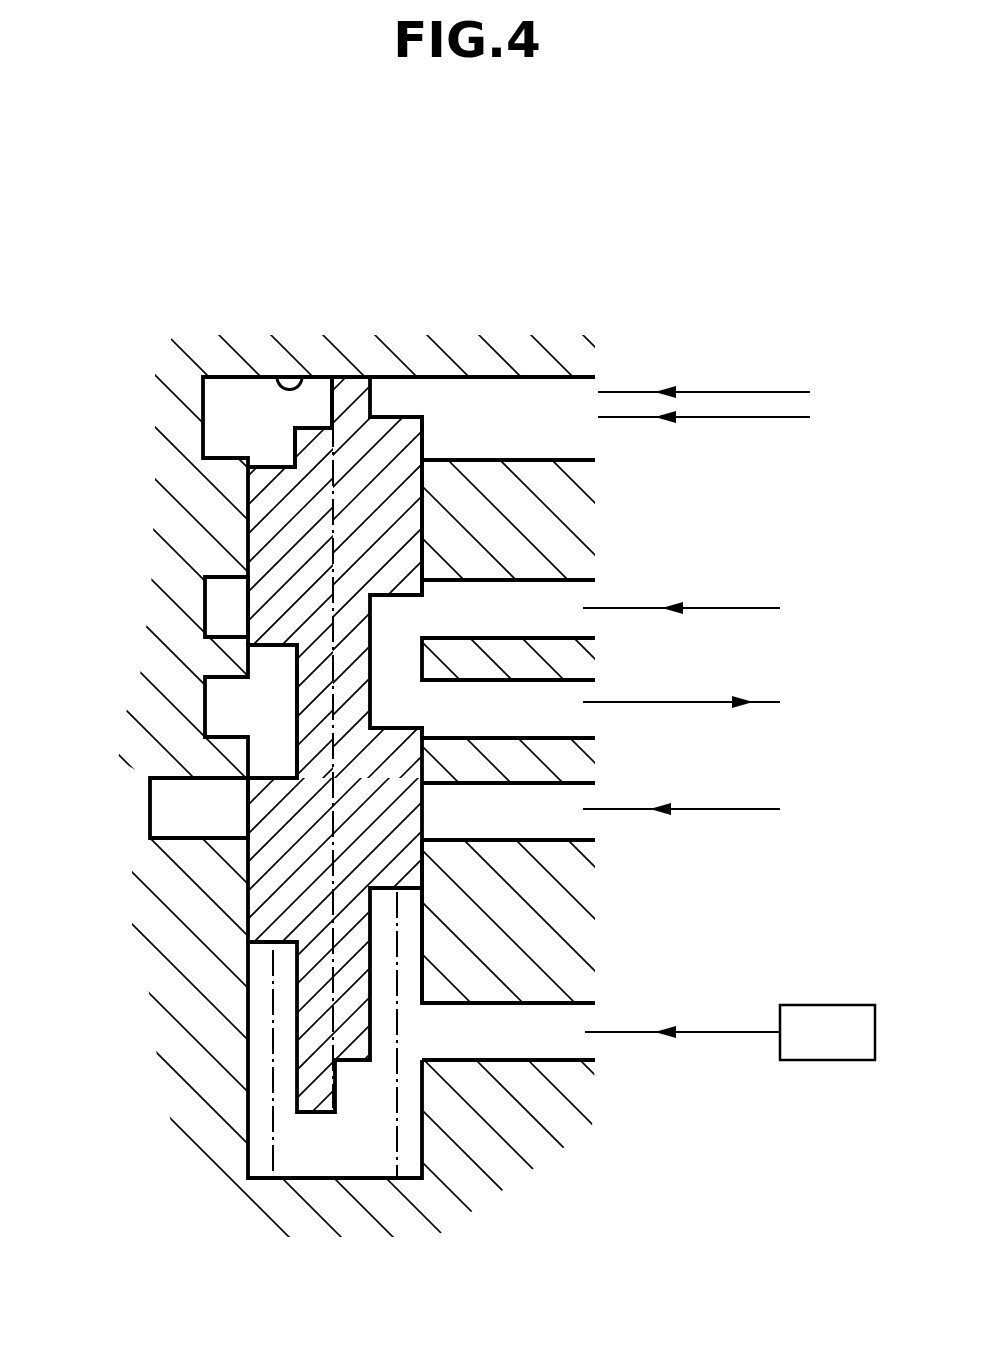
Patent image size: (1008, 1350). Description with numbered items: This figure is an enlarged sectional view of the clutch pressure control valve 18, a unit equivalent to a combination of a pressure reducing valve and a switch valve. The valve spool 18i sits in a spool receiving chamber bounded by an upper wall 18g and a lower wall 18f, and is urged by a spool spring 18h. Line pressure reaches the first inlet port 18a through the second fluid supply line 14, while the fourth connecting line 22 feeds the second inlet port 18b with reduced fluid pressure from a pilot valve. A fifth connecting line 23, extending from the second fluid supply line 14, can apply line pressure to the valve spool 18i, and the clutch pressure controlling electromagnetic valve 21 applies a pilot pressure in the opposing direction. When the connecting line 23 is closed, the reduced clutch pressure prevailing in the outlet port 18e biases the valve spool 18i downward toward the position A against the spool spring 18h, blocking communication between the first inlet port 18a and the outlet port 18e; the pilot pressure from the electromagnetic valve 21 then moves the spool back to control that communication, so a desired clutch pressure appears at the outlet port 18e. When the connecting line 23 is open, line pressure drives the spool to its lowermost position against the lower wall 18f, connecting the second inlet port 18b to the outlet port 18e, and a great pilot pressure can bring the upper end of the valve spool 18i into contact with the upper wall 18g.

The clutch pressure control valve 18 is at (489, 264).
The first inlet port 18a is at (575, 581).
The second inlet port 18b is at (543, 840).
The outlet port 18e is at (568, 738).
The lower wall 18f is at (333, 1178).
The upper wall 18g is at (301, 376).
The spool spring 18h is at (273, 1066).
The valve spool 18i is at (262, 596).
The fifth connecting line 23 is at (748, 386).
The second fluid supply line 14 is at (748, 606).
The fourth connecting line 22 is at (744, 813).
The clutch pressure controlling electromagnetic valve 21 is at (730, 1032).
The position A is at (273, 527).